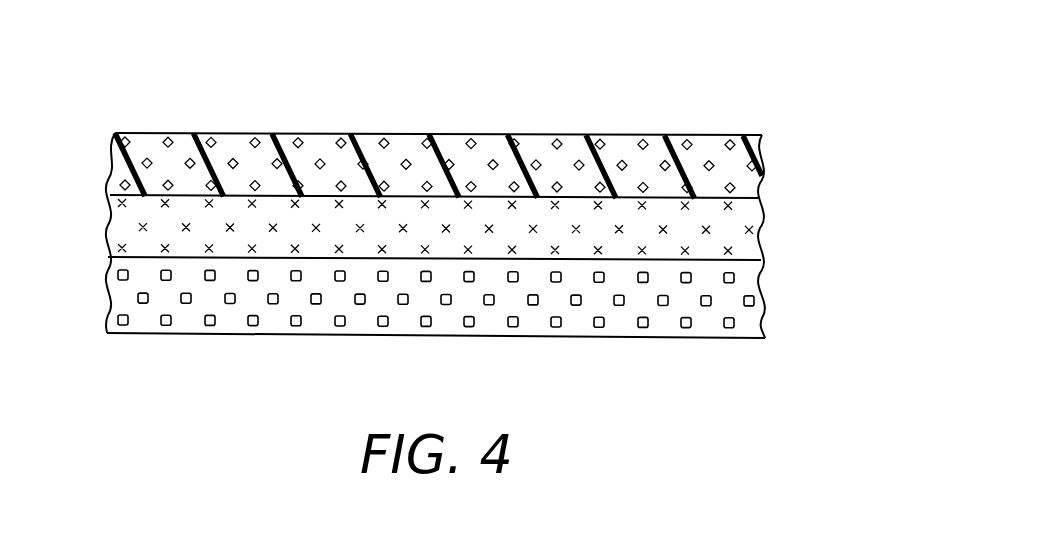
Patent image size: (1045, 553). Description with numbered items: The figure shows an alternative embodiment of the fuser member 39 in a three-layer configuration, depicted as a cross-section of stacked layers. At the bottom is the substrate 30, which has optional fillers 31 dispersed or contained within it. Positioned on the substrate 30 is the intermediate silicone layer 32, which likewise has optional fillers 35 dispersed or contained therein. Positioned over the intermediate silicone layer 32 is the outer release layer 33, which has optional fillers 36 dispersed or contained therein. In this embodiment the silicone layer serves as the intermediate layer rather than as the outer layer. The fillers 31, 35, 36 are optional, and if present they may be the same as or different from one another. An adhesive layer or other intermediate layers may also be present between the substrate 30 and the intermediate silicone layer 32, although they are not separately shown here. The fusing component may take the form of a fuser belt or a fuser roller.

The fuser member 39 is at (665, 84).
The outer release layer 33 is at (112, 172).
The fillers 36 is at (231, 158).
The intermediate silicone layer 32 is at (118, 225).
The fillers 35 is at (745, 250).
The substrate 30 is at (123, 293).
The fillers 31 is at (315, 303).